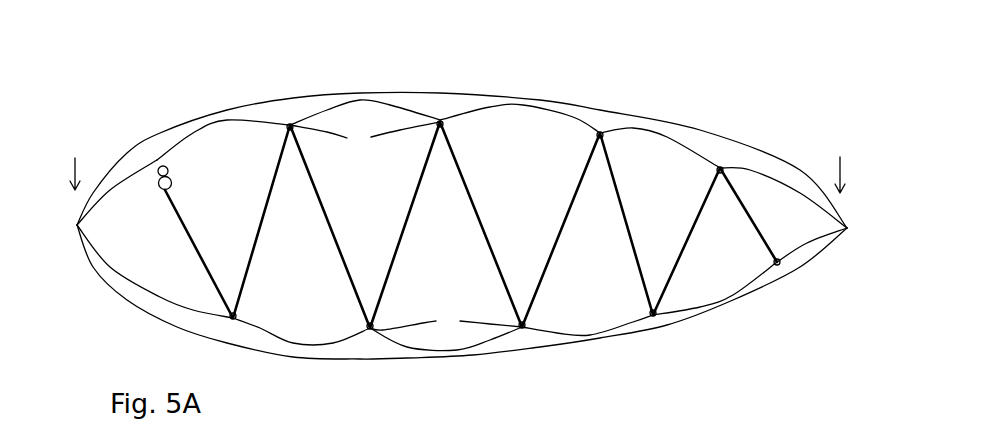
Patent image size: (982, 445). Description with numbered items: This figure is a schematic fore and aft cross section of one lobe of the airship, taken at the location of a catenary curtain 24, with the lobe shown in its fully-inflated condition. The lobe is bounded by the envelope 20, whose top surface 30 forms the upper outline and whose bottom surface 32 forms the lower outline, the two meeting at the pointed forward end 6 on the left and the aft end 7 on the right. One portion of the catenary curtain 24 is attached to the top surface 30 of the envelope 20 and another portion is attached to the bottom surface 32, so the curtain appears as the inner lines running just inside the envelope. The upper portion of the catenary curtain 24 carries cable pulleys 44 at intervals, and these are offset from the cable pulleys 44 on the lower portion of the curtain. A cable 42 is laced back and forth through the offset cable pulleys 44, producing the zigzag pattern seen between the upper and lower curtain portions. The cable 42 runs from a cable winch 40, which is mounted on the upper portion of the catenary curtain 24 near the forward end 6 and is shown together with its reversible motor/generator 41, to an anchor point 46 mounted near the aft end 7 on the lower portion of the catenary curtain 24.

The envelope 20 is at (462, 226).
The catenary curtain 24 is at (625, 133).
The top surface 30 is at (409, 93).
The bottom surface 32 is at (402, 358).
The cable winch 40 is at (159, 190).
The reversible motor/generator 41 is at (168, 169).
The cable 42 is at (572, 203).
The cable pulley 44 is at (406, 226).
The anchor point 46 is at (777, 262).
The forward end 6 is at (74, 164).
The aft end 7 is at (840, 165).